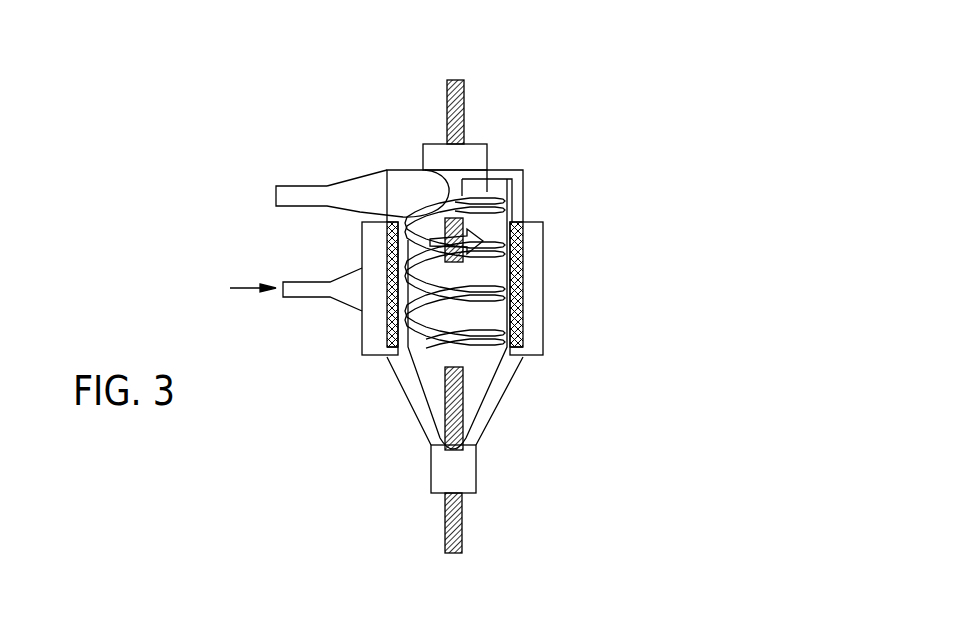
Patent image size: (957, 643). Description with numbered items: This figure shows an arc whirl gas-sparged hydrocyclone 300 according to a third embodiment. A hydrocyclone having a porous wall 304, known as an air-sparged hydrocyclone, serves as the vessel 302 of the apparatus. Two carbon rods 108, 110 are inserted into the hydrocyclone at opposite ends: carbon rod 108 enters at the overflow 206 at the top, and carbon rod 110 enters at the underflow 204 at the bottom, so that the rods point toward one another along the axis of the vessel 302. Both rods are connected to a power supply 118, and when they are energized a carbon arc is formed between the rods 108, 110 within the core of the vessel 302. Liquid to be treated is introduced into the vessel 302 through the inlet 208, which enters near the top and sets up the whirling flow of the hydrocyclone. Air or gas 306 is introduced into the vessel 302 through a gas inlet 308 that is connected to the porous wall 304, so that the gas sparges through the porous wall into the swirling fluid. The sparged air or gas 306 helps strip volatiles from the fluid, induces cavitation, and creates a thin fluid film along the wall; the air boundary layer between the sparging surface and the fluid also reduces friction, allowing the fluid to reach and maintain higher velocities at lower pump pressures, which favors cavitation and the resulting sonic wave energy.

The arc whirl gas-sparged hydrocyclone 300 is at (563, 66).
The power supply 118 is at (451, 319).
The carbon rod 108 is at (447, 105).
The overflow 206 is at (488, 155).
The inlet 208 is at (275, 193).
The porous wall 304 is at (523, 253).
The vessel 302 is at (543, 308).
The air or gas 306 is at (225, 302).
The gas inlet 308 is at (310, 298).
The underflow 204 is at (477, 463).
The carbon rod 110 is at (463, 530).